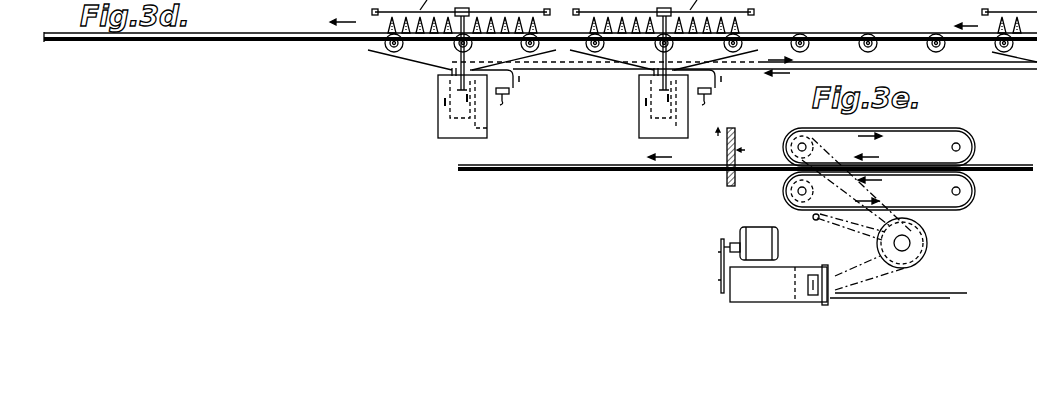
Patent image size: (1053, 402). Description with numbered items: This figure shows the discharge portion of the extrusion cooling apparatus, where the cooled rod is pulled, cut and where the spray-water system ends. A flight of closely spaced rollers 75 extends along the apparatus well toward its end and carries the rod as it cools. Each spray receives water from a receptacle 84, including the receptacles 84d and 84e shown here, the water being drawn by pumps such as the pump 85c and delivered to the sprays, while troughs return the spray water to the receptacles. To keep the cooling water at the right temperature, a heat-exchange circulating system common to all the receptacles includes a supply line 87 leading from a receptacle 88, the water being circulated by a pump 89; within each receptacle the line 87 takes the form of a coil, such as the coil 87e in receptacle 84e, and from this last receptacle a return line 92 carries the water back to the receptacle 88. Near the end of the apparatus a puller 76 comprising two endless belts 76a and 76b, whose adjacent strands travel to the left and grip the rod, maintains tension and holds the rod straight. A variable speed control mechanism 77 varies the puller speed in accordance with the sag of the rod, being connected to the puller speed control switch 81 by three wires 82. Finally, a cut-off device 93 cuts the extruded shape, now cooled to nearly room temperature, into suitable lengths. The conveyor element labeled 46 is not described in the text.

In FIG. 3D, the conveyor rail 46 is at (299, 24).
In FIG. 3E, the conveyor rail 46 is at (528, 150).
In FIG. 3D, the roller 75 is at (392, 54).
In FIG. 3D, the puller speed control switch 81 is at (548, 66).
In FIG. 3D, the return line 92 is at (582, 64).
In FIG. 3D, the receptacle 84e is at (438, 125).
In FIG. 3D, the coil 87e is at (487, 128).
In FIG. 3D, the receptacle 84d is at (639, 126).
In FIG. 3D, the receptacle 84 is at (797, 8).
In FIG. 3D, the pump 85c is at (815, 0).
In FIG. 3D, the receptacle 88 is at (830, 0).
In FIG. 3D, the supply line 87 is at (870, 0).
In FIG. 3D, the pump 89 is at (912, 0).
In FIG. 3E, the cut-off device 93 is at (740, 150).
In FIG. 3E, the puller 76 is at (905, 180).
In FIG. 3E, the endless belt 76a is at (895, 128).
In FIG. 3E, the endless belt 76b is at (933, 210).
In FIG. 3E, the variable speed control mechanism 77 is at (812, 268).
In FIG. 3E, the wires 82 is at (885, 298).